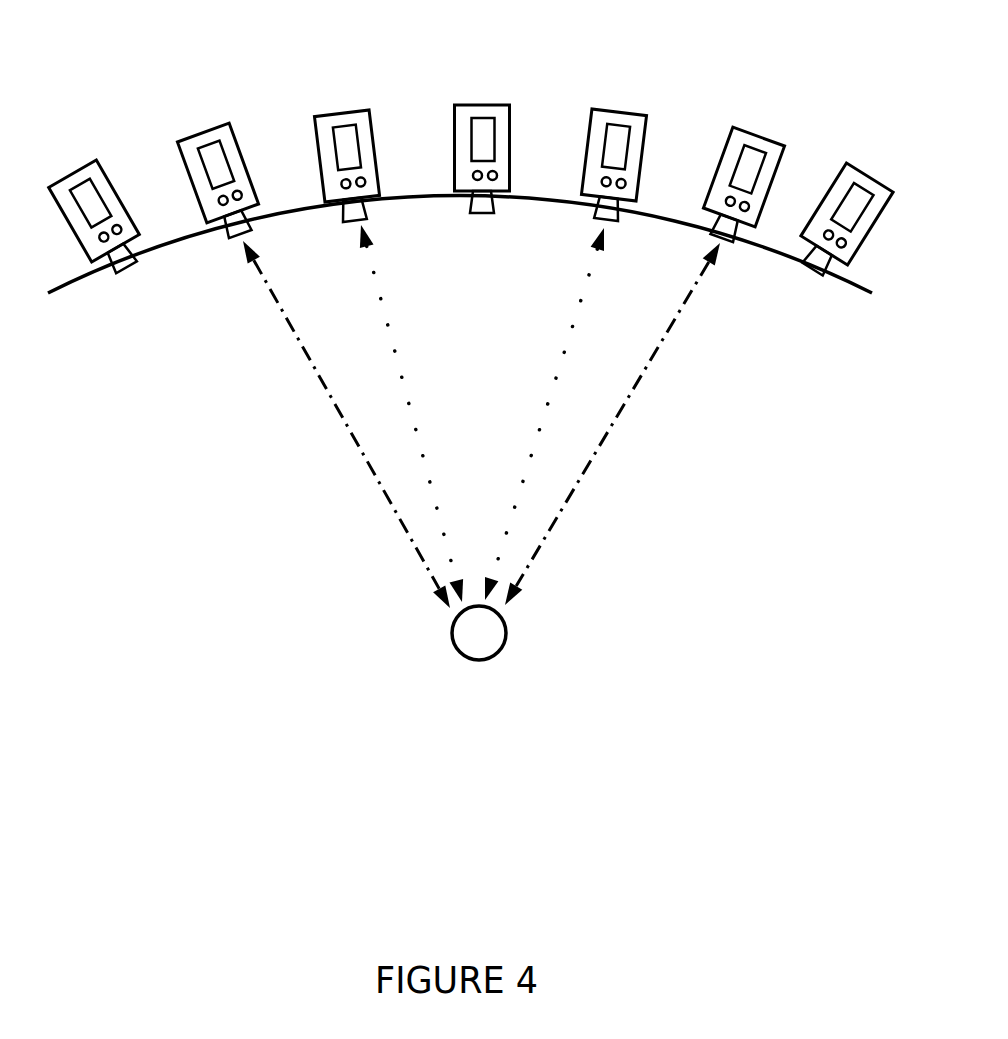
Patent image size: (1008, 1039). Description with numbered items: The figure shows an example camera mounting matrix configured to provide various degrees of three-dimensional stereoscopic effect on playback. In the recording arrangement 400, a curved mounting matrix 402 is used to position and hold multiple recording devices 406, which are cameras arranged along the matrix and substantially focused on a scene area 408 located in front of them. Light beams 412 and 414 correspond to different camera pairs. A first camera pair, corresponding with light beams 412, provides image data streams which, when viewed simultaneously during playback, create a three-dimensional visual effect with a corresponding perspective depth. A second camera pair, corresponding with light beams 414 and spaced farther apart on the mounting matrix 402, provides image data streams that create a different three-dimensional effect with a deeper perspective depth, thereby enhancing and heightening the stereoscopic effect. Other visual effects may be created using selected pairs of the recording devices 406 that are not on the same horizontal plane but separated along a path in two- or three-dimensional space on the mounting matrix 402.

The recording arrangement 400 is at (683, 108).
The mounting matrix 402 is at (172, 223).
The recording devices 406 is at (203, 132).
The scene area 408 is at (507, 633).
The light beams 412 is at (570, 313).
The light beams 414 is at (570, 463).